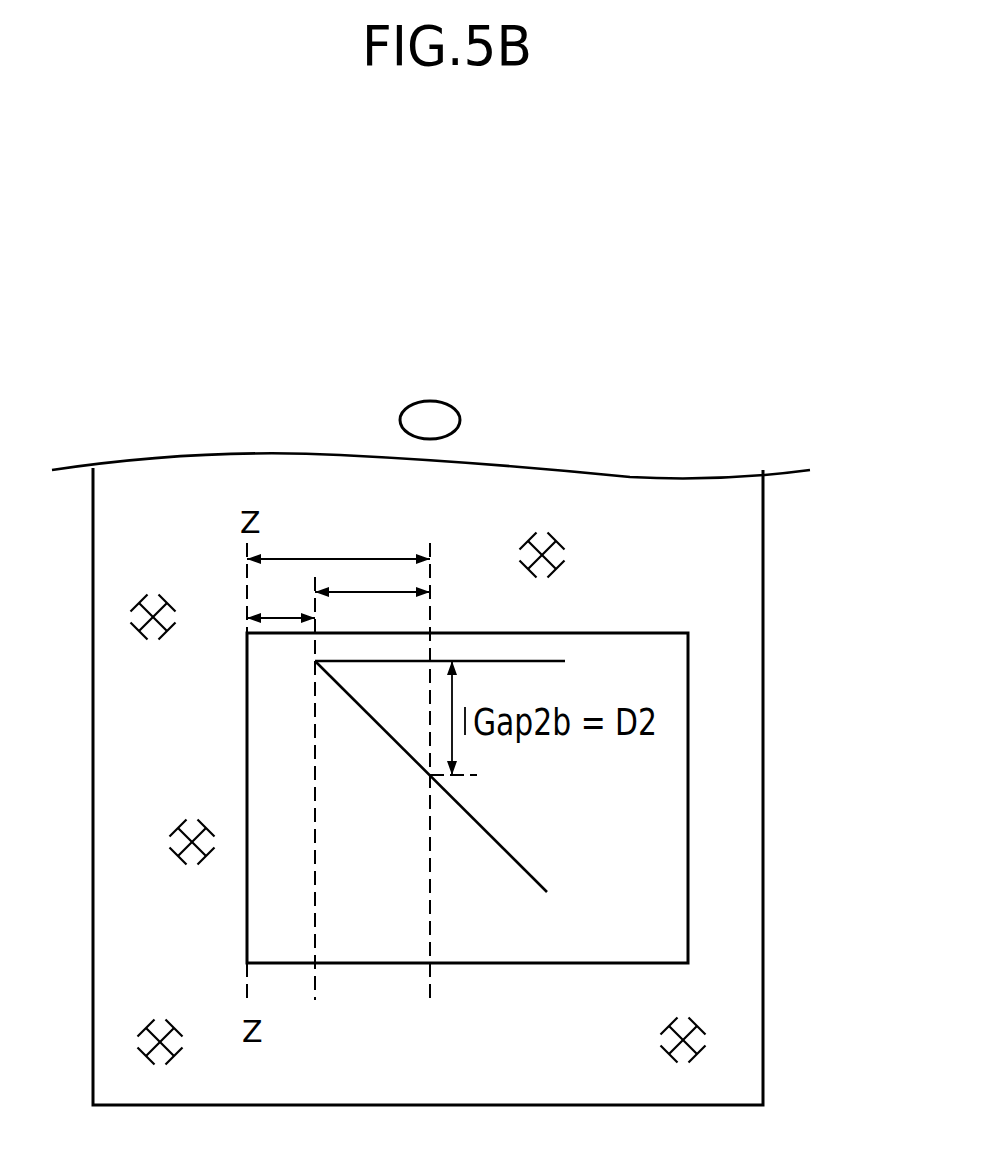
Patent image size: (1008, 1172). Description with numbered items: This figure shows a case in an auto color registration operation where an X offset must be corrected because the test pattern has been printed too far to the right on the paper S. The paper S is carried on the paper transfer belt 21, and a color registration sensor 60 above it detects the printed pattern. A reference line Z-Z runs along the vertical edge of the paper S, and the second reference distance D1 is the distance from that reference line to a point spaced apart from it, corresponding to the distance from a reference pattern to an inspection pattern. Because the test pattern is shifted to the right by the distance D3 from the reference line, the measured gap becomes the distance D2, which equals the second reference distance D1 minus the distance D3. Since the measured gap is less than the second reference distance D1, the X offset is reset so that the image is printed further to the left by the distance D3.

The color registration sensor 60 is at (438, 412).
The paper transfer belt 21 is at (728, 963).
The paper S is at (690, 782).
The second reference distance D1 is at (338, 535).
The distance D2 is at (372, 611).
The distance D3 is at (281, 596).